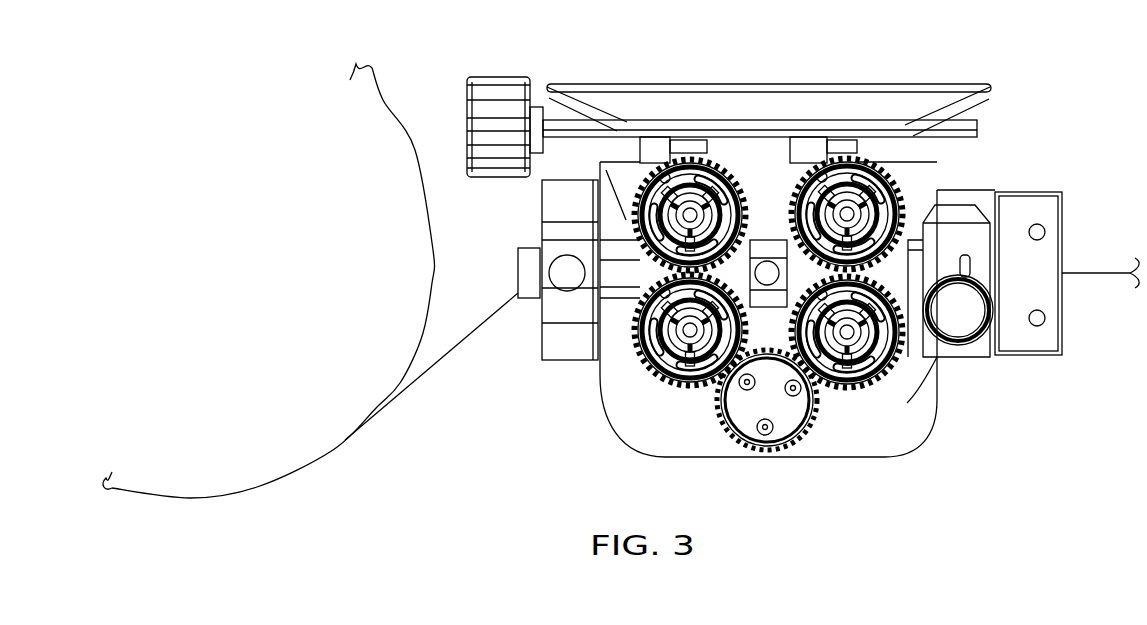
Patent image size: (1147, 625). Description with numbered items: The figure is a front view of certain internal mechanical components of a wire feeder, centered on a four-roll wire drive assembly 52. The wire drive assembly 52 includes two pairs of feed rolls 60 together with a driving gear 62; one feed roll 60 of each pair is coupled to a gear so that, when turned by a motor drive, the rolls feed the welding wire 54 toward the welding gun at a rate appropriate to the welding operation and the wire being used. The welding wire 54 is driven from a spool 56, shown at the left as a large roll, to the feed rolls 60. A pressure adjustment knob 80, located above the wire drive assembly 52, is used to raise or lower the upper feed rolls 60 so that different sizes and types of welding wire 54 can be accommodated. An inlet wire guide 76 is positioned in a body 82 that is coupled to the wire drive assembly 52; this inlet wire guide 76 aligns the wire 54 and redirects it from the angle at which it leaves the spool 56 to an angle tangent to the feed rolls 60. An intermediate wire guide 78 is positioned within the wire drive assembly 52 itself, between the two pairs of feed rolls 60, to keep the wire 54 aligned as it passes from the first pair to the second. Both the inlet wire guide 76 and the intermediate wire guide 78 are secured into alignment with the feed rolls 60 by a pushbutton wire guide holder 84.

The wire drive assembly 52 is at (910, 185).
The welding wire 54 is at (437, 358).
The spool 56 is at (285, 316).
The feed rolls 60 is at (622, 166).
The driving gear 62 is at (733, 420).
The inlet wire guide 76 is at (518, 270).
The intermediate wire guide 78 is at (747, 260).
The pressure adjustment knob 80 is at (500, 77).
The body 82 is at (543, 207).
The pushbutton wire guide holder 84 is at (545, 312).